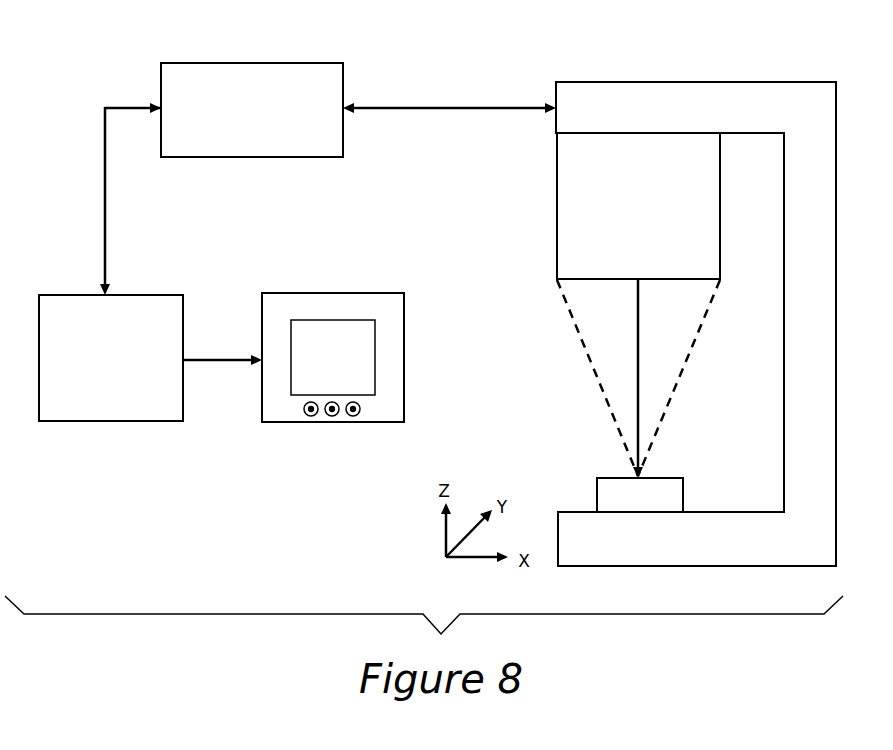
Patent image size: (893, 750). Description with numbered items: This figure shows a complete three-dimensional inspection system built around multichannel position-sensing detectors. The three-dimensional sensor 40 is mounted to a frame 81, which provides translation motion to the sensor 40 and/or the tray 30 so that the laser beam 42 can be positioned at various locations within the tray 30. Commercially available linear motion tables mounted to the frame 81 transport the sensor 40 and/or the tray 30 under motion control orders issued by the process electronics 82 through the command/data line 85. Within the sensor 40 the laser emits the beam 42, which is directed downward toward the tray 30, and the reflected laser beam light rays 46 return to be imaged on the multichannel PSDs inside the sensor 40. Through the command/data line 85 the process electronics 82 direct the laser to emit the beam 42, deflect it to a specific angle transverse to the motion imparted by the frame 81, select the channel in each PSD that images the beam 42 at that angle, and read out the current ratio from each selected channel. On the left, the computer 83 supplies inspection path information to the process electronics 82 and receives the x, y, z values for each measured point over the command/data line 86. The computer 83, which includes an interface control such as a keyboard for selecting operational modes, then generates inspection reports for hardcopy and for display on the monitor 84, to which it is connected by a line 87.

The tray 30 is at (684, 485).
The 3-D sensor 40 is at (720, 204).
The laser beam 42 is at (640, 297).
The reflected laser beam light rays 46 is at (680, 383).
The frame 81 is at (679, 82).
The process electronics 82 is at (252, 63).
The computer 83 is at (145, 295).
The monitor 84 is at (334, 293).
The command/data line 85 is at (443, 107).
The command/data line 86 is at (103, 214).
The signal line 87 is at (216, 367).